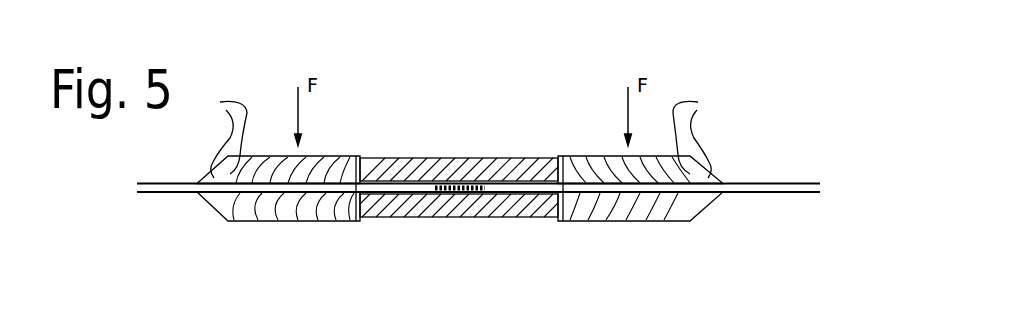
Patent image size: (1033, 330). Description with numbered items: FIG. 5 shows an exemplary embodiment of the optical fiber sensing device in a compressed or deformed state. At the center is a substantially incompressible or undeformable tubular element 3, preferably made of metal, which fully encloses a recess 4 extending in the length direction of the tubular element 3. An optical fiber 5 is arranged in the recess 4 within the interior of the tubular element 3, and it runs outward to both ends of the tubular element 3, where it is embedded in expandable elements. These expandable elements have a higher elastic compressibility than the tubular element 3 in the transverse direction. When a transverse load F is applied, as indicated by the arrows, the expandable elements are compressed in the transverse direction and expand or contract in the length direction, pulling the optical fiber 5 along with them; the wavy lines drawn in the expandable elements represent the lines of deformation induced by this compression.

The tubular element 3 is at (510, 204).
The recess 4 is at (462, 198).
The optical fiber 5 is at (166, 193).